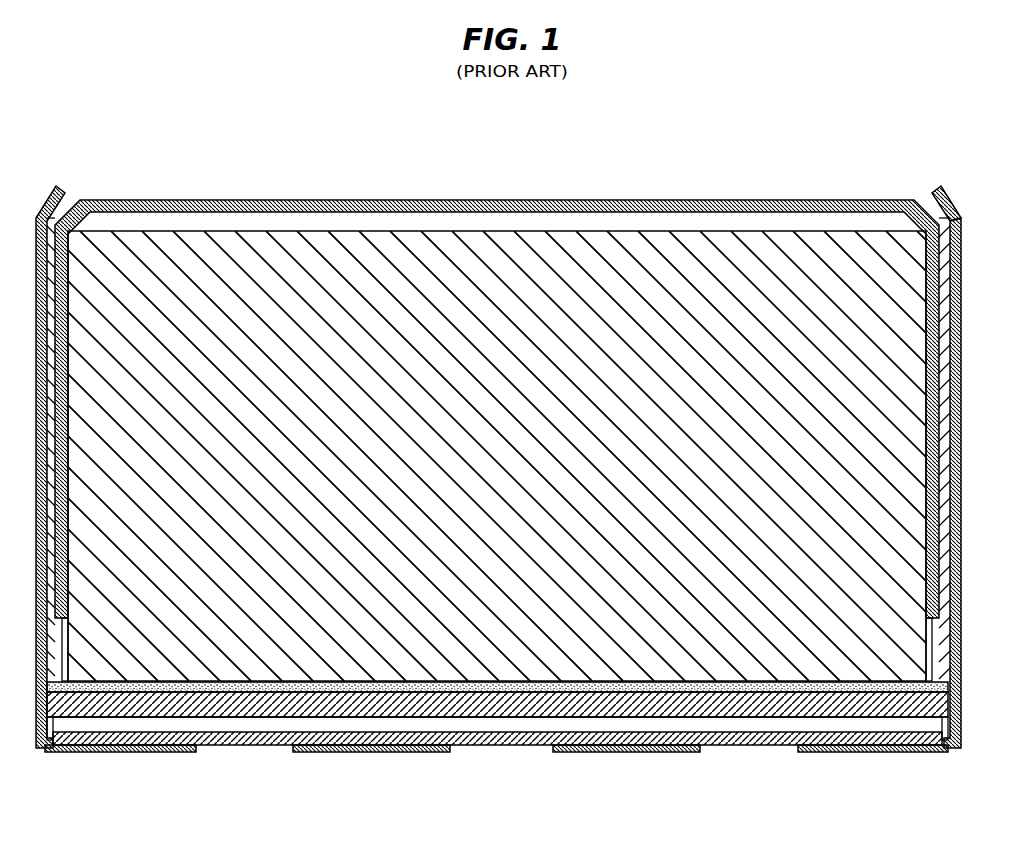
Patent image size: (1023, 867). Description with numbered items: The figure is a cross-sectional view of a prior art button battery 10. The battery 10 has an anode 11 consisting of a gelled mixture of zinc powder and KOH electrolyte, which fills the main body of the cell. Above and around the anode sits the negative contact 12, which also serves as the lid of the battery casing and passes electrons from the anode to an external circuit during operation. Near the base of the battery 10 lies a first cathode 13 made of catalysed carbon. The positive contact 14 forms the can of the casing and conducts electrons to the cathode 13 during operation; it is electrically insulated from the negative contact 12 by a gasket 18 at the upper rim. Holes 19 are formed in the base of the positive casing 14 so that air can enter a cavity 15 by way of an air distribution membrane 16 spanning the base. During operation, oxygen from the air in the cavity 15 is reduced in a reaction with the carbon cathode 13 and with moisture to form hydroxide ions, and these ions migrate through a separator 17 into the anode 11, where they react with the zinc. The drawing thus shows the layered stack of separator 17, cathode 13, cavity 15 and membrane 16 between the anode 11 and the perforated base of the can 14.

The button battery 10 is at (403, 126).
The anode 11 is at (493, 230).
The negative contact 12 is at (890, 199).
The first cathode 13 is at (367, 703).
The positive contact 14 is at (960, 752).
The cavity 15 is at (153, 725).
The air distribution membrane 16 is at (183, 742).
The separator 17 is at (108, 691).
The gasket 18 is at (952, 199).
The holes 19 is at (241, 772).